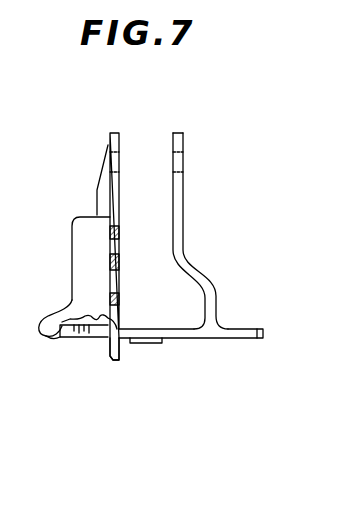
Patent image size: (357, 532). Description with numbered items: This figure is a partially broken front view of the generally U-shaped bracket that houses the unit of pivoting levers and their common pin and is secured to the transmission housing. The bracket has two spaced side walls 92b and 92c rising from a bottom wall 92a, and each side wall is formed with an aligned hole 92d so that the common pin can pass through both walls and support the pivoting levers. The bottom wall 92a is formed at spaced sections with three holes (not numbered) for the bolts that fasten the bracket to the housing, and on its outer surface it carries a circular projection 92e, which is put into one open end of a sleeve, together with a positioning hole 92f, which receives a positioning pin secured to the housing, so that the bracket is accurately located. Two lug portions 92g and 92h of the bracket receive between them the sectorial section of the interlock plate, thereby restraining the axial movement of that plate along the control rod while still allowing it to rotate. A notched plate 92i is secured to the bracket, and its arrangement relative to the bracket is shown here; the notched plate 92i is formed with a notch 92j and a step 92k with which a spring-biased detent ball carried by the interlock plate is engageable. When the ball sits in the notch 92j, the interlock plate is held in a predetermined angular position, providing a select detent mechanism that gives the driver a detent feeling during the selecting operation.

The bottom wall 92a is at (103, 339).
The side wall 92b is at (110, 138).
The side wall 92c is at (183, 140).
The aligned holes 92d is at (120, 152).
The circular projection 92e is at (148, 344).
The positioning hole 92f is at (78, 338).
The lug portion 92g is at (172, 385).
The lug portion 92h is at (118, 362).
The notched plate 92i is at (90, 255).
The notch 92j is at (60, 338).
The step 92k is at (78, 318).